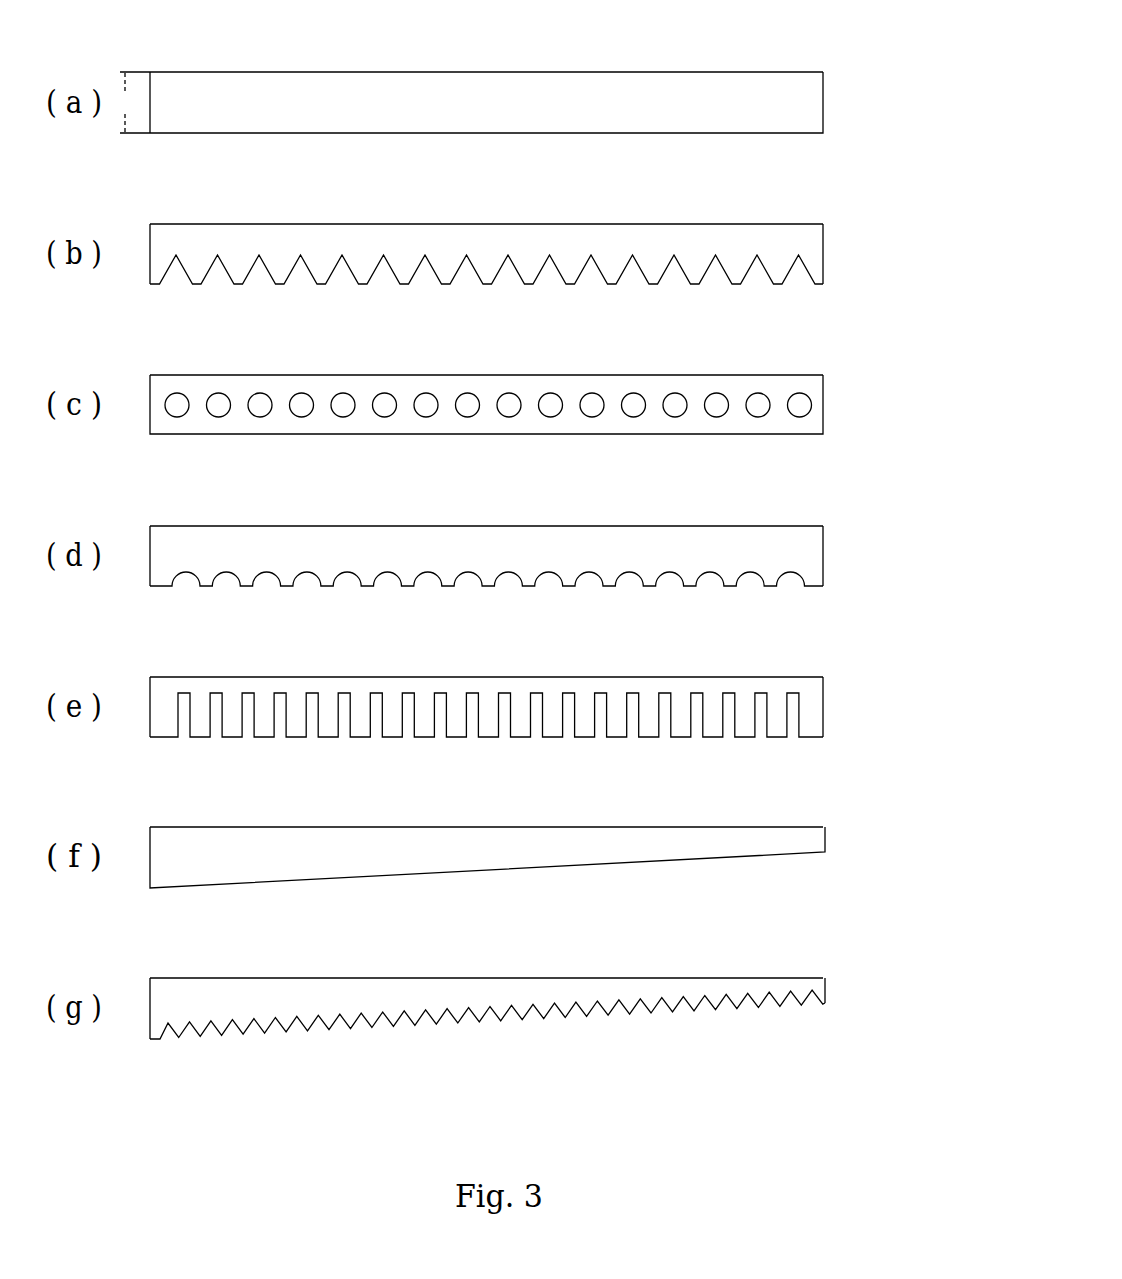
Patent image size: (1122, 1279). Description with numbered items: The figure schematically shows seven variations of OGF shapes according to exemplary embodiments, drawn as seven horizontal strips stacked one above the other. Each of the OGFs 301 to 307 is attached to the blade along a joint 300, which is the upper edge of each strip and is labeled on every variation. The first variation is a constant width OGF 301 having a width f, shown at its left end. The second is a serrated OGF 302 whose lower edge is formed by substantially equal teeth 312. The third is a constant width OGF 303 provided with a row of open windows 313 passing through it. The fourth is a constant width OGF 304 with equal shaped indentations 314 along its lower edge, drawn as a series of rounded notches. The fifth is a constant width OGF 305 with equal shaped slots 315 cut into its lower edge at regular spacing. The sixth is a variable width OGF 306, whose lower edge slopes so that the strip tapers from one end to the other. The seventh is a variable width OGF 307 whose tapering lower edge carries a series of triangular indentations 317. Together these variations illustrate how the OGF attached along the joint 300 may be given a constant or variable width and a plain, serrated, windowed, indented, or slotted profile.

The joint 300 is at (779, 72).
The constant width OGF 301 is at (823, 100).
The serrated OGF 302 is at (512, 289).
The constant width OGF 303 is at (512, 439).
The constant width OGF 304 is at (512, 591).
The constant width OGF 305 is at (512, 742).
The variable width OGF 306 is at (825, 840).
The variable width OGF 307 is at (512, 1043).
The teeth 312 is at (237, 285).
The open windows 313 is at (220, 416).
The indentations 314 is at (228, 573).
The slots 315 is at (222, 726).
The triangular indentations 317 is at (216, 1023).